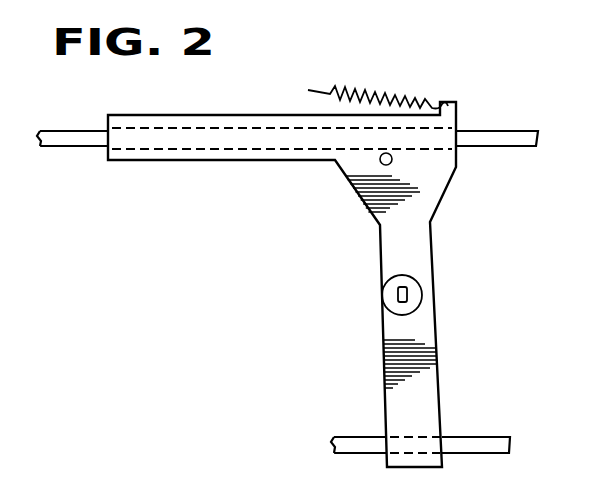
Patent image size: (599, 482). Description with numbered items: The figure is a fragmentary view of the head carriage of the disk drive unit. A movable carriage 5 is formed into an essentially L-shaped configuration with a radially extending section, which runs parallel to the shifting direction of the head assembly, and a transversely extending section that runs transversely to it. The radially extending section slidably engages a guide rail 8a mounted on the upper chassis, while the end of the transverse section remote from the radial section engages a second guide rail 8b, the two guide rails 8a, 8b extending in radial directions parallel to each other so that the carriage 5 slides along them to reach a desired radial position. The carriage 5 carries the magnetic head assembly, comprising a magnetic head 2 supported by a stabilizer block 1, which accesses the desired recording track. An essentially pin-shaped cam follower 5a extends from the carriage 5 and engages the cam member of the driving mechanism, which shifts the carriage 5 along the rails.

The stabilizer block 1 is at (417, 309).
The magnetic head 2 is at (408, 290).
The carriage 5 is at (413, 242).
The cam follower 5a is at (392, 162).
The guide rail 8a is at (85, 139).
The guide rail 8b is at (476, 445).